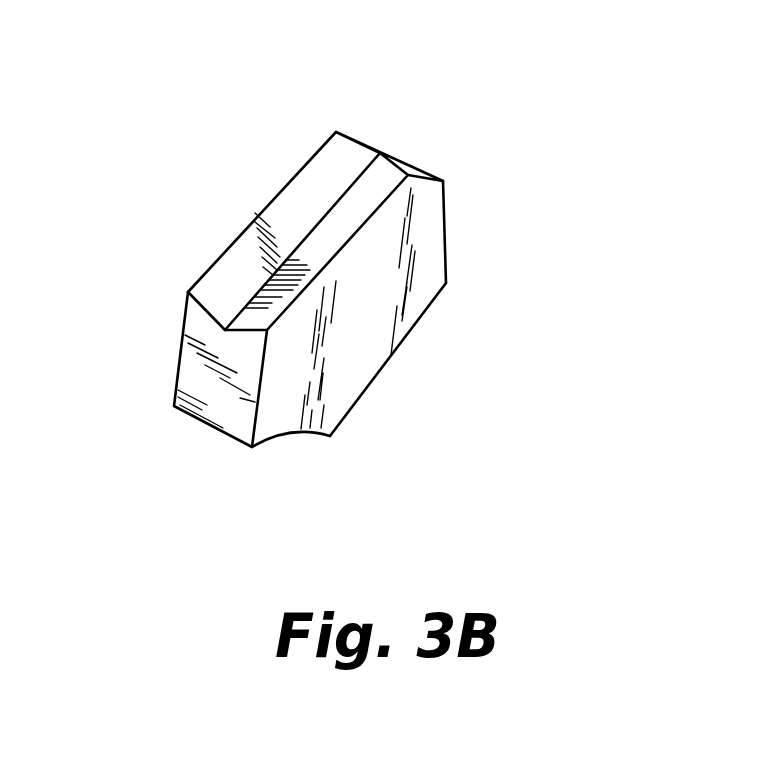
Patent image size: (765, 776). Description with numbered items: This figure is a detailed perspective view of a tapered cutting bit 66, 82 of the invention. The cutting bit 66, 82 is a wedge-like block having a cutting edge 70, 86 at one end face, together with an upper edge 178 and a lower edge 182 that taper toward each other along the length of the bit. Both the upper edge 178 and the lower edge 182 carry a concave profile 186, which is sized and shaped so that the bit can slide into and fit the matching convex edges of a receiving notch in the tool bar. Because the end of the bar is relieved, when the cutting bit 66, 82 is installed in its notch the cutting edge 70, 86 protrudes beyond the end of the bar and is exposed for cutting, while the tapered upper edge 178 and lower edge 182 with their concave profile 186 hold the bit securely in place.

The tapered cutting bit 66 is at (412, 311).
The tapered cutting bit 82 is at (382, 317).
The cutting edge 70 is at (166, 393).
The cutting edge 86 is at (215, 430).
The upper edge 178 is at (247, 248).
The lower edge 182 is at (364, 390).
The concave profile 186 is at (325, 152).